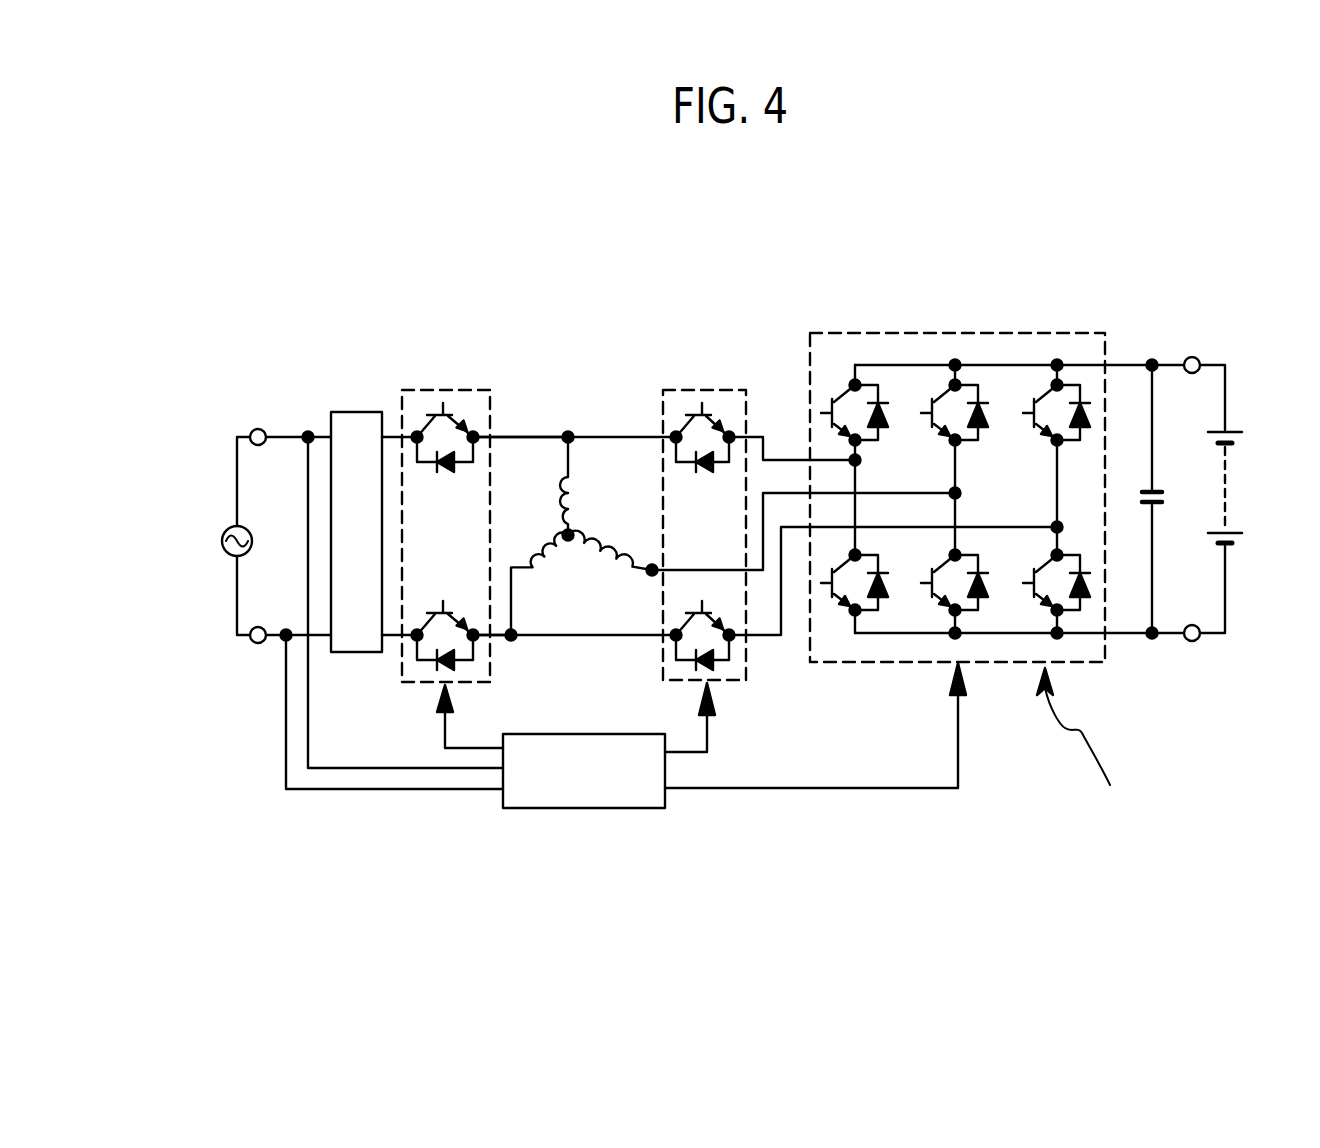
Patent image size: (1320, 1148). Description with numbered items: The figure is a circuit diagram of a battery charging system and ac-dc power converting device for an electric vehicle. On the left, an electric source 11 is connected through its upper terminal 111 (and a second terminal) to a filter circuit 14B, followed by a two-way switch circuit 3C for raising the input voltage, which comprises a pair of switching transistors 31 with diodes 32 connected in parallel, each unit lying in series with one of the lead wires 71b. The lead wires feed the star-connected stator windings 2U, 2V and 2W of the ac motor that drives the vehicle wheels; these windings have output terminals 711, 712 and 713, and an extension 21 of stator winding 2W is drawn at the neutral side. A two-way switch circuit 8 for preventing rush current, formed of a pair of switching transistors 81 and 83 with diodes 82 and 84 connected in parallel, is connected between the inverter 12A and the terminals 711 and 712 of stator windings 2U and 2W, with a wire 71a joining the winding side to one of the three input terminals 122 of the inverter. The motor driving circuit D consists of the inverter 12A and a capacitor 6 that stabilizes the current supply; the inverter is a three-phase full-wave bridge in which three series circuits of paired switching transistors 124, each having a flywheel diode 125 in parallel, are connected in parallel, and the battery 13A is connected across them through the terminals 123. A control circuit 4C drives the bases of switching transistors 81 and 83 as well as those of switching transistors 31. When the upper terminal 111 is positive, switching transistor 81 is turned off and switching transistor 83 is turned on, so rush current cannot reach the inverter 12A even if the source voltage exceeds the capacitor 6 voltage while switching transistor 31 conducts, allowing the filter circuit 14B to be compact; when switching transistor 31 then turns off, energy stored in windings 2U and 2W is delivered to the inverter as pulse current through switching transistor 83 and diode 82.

The electric source 11 is at (227, 557).
The upper terminal 111 is at (252, 427).
The filter circuit 14B is at (336, 410).
The two-way switch circuit 3C is at (412, 434).
The switching transistor 31 is at (437, 415).
The diode 32 is at (447, 468).
The lead wire 71b is at (502, 437).
The extension of stator winding 21 is at (574, 479).
The stator winding 2U is at (575, 500).
The stator winding 2V is at (610, 629).
The stator winding 2W is at (537, 547).
The output terminal 711 is at (568, 437).
The output terminal 712 is at (511, 640).
The output terminal 713 is at (652, 572).
The two-way switch circuit 8 is at (711, 584).
The switching transistor 81 is at (700, 412).
The diode 82 is at (715, 470).
The switching transistor 83 is at (703, 613).
The diode 84 is at (712, 668).
The wire 71a is at (790, 460).
The inverter 12A is at (997, 556).
The switching transistor 124 is at (830, 413).
The flywheel diode 125 is at (877, 403).
The input terminal 122 is at (865, 460).
The motor driving circuit D is at (1084, 750).
The capacitor 6 is at (1155, 485).
The DC terminals 123 is at (1205, 352).
The battery 13A is at (1228, 494).
The control circuit 4C is at (533, 808).